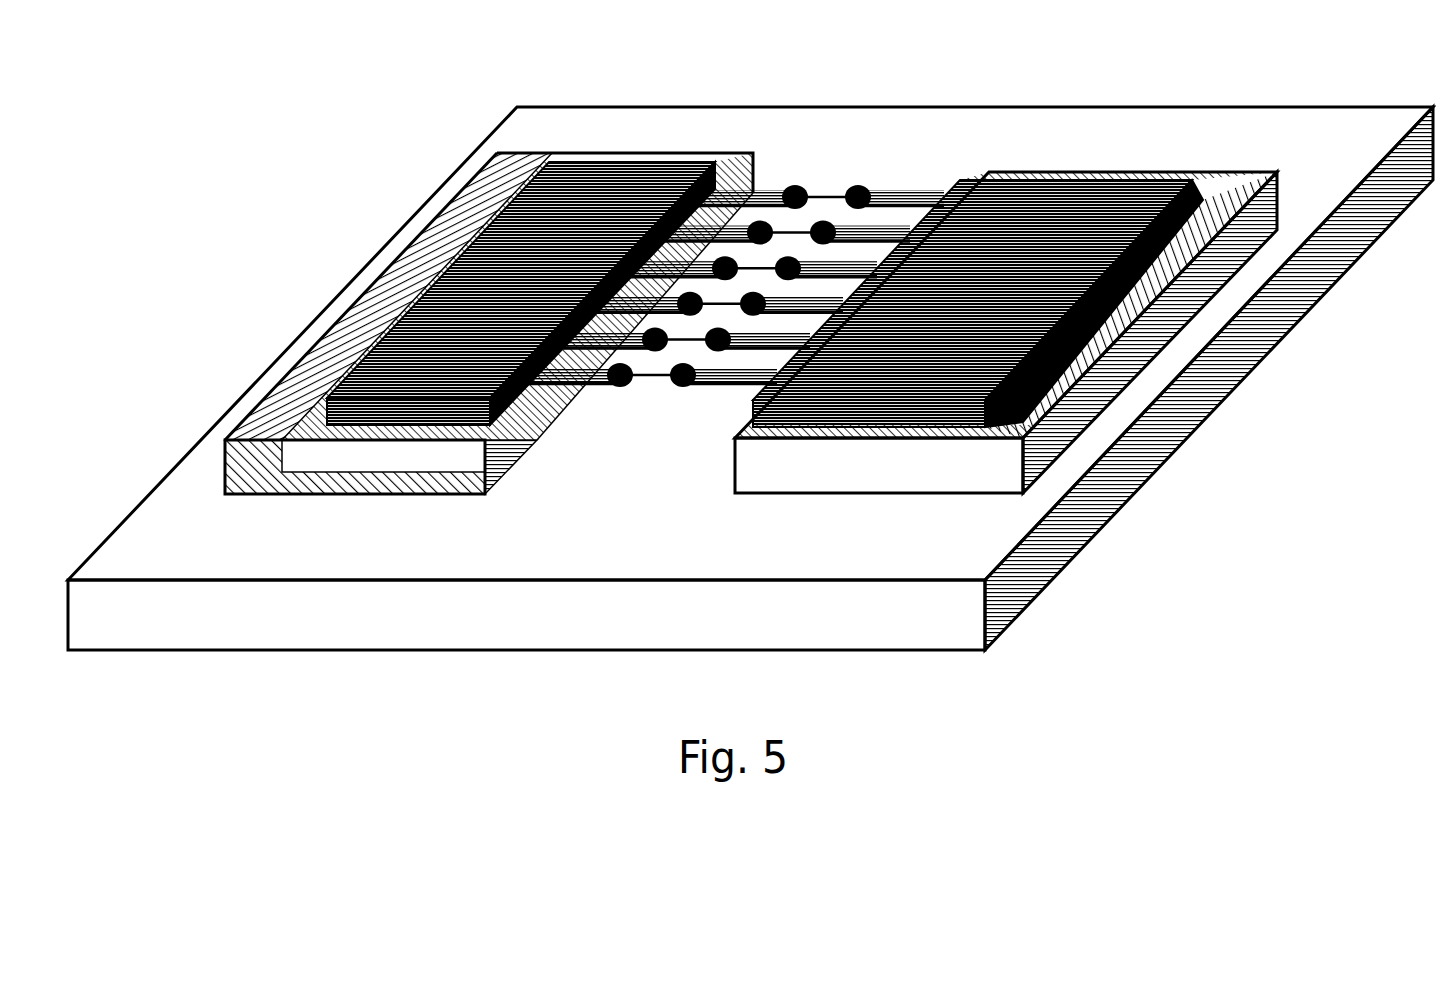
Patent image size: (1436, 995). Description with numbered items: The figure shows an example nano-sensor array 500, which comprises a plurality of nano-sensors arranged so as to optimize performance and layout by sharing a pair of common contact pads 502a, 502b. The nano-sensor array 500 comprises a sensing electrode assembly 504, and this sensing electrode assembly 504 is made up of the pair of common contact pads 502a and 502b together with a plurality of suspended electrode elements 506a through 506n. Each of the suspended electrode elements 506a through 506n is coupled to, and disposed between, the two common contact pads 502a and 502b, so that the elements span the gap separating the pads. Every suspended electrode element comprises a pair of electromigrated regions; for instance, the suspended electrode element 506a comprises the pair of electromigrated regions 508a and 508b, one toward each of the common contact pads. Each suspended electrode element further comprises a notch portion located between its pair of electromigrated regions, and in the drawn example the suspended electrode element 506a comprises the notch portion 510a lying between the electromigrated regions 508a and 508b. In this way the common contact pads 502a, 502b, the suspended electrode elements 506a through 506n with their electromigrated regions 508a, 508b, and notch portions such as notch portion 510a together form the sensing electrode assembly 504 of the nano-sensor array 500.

The nano-sensor array 500 is at (750, 344).
The common contact pad 502a is at (477, 322).
The common contact pad 502b is at (1060, 205).
The sensing electrode assembly 504 is at (843, 302).
The suspended electrode element 506a is at (578, 377).
The suspended electrode element 506n is at (866, 141).
The electromigrated region 508a is at (610, 395).
The electromigrated region 508b is at (667, 393).
The notch portion 510a is at (648, 380).